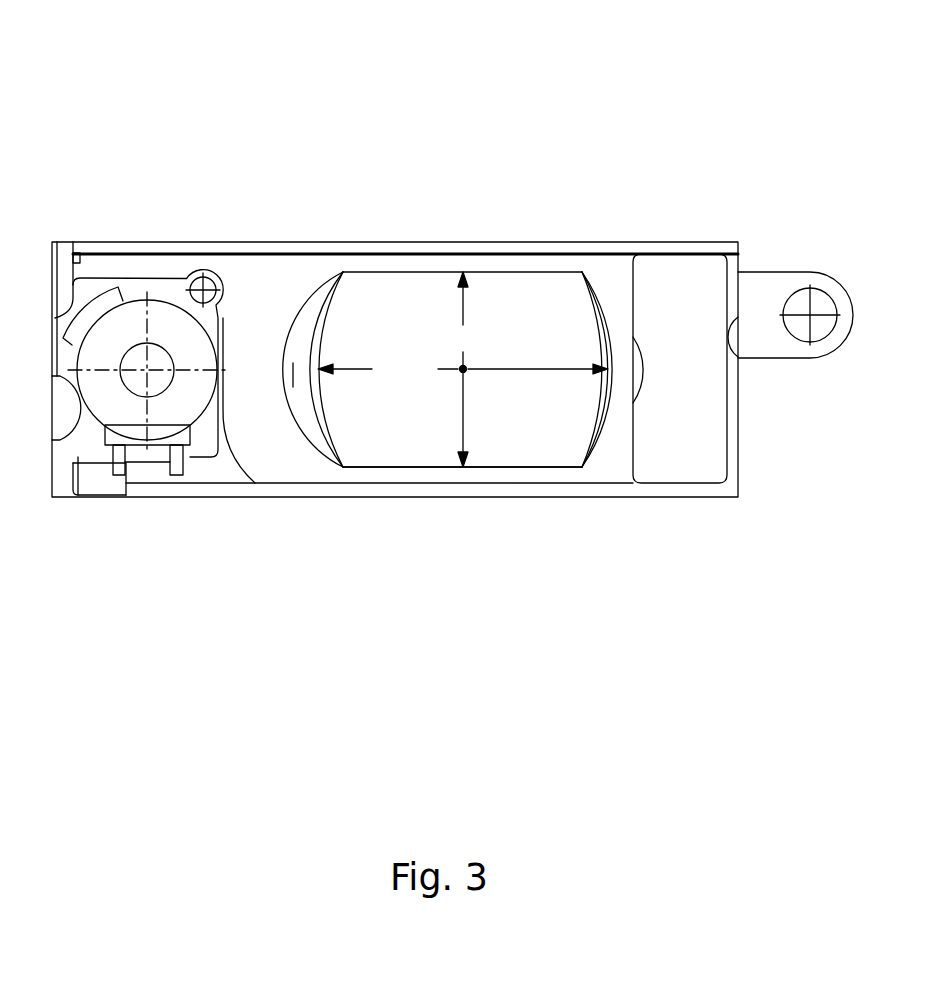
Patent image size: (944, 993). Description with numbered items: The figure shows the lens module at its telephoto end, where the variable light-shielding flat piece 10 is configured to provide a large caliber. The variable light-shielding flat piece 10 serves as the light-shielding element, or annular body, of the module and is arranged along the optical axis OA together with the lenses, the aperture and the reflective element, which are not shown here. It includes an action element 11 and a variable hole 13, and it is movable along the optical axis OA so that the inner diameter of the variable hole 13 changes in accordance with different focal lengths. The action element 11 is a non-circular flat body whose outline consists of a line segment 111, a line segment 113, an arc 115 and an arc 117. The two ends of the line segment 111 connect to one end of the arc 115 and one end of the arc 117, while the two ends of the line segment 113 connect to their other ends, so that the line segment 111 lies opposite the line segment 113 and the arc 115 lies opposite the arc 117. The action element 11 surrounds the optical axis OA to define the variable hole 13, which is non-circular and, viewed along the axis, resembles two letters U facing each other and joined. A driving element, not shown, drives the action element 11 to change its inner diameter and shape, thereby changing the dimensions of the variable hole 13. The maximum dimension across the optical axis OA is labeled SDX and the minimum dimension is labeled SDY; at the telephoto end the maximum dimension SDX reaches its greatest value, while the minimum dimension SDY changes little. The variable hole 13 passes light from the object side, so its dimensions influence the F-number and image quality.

The variable light-shielding flat piece 10 is at (88, 75).
The action element 11 is at (732, 104).
The line segment 111 is at (493, 272).
The line segment 113 is at (543, 468).
The arc 115 is at (331, 296).
The arc 117 is at (588, 296).
The variable hole 13 is at (510, 440).
The optical axis OA is at (457, 372).
The maximum dimension of the variable hole SDX is at (463, 370).
The minimum dimension of the variable hole SDY is at (463, 369).